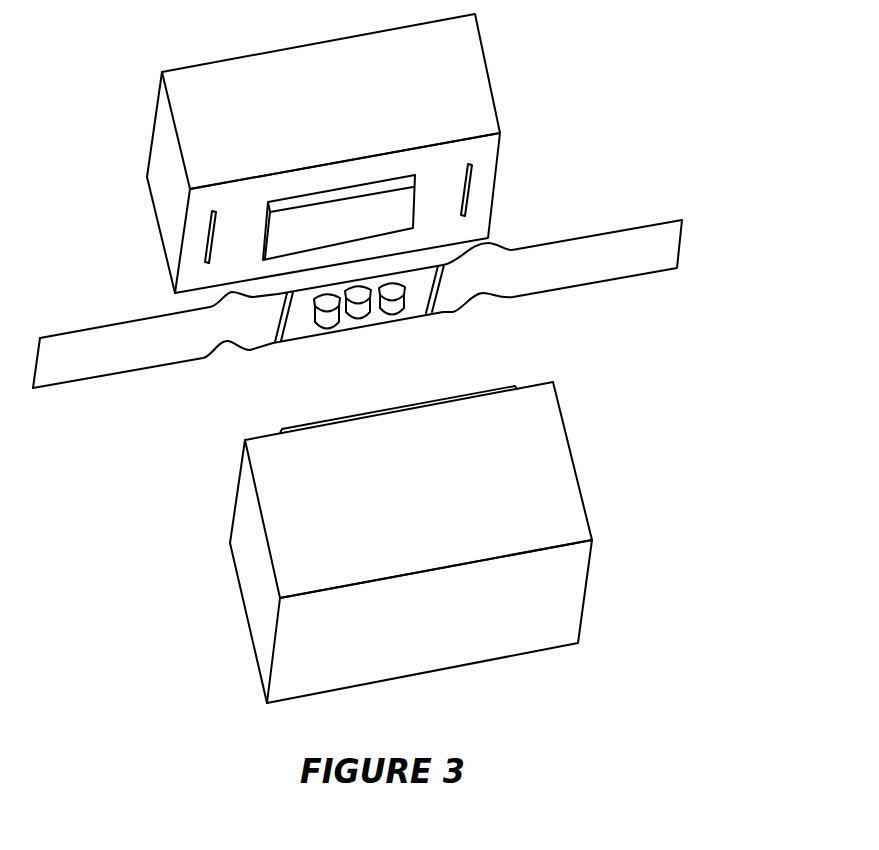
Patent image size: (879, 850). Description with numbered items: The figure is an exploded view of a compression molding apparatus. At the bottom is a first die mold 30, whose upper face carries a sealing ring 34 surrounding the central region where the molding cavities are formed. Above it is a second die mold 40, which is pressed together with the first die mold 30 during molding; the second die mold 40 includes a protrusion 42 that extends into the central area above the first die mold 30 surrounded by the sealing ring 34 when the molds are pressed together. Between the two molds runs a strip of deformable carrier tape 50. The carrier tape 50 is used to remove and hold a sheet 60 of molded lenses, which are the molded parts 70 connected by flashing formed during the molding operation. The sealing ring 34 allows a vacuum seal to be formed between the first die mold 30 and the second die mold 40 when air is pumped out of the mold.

The first die mold 30 is at (577, 462).
The sealing ring 34 is at (312, 424).
The second die mold 40 is at (485, 57).
The protrusion 42 is at (270, 242).
The carrier tape 50 is at (646, 223).
The sheet of molded lenses 60 is at (298, 343).
The molded parts 70 is at (413, 308).